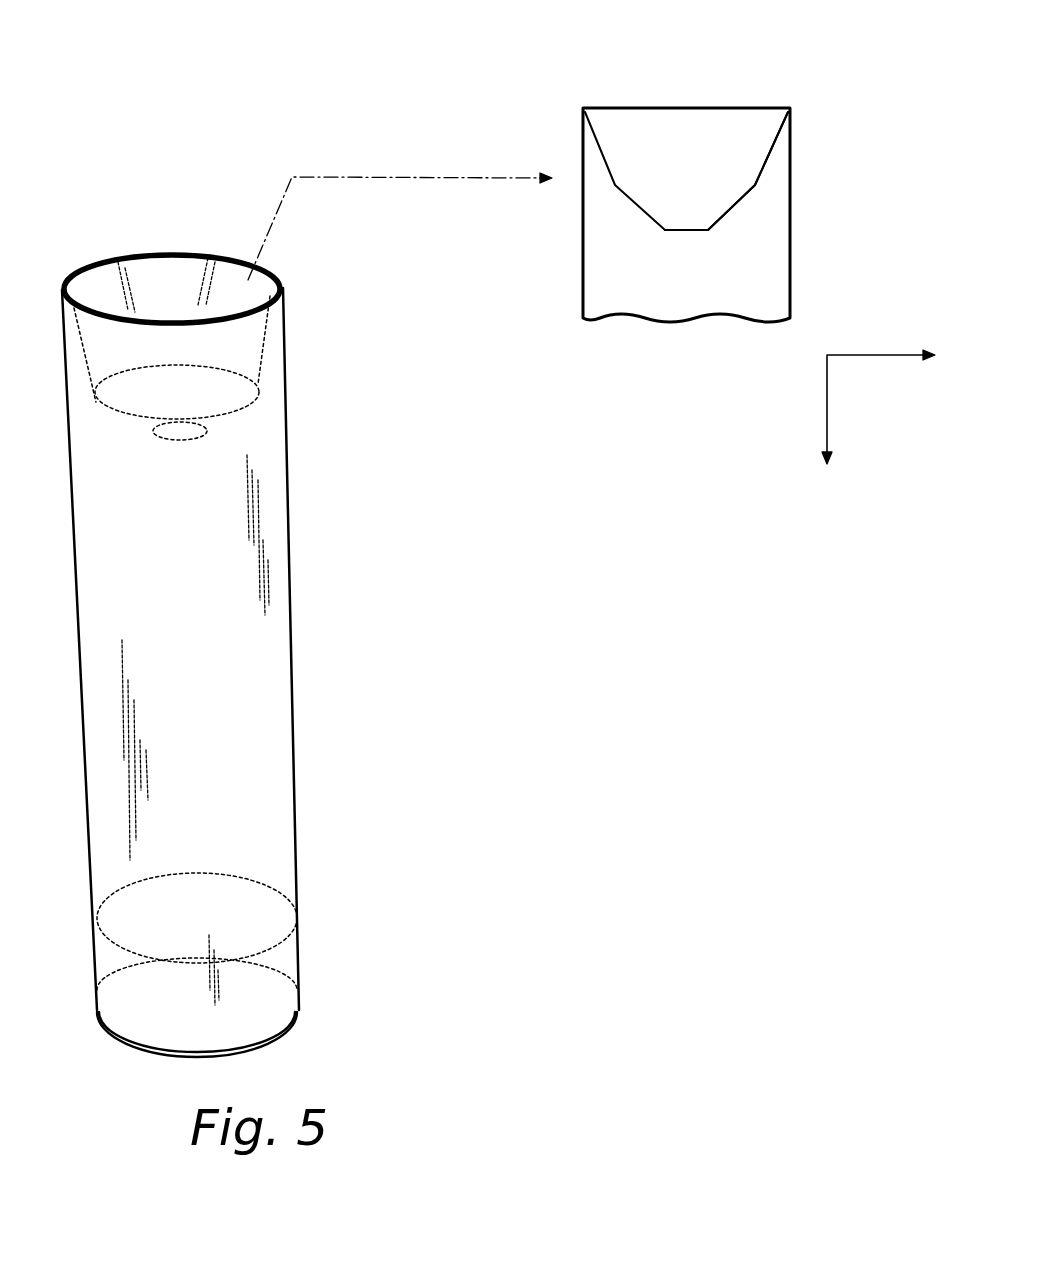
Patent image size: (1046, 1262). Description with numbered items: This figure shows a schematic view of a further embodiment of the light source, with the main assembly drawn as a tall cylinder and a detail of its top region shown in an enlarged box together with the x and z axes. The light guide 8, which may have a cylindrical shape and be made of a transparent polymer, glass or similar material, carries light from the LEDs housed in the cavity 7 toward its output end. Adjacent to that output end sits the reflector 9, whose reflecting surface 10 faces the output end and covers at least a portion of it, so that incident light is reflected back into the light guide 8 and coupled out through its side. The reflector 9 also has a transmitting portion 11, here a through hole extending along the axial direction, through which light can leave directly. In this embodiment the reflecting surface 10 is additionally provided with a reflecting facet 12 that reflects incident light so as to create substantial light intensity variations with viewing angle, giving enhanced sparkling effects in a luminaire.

The cavity 7 is at (287, 962).
The light guide 8 is at (348, 406).
The reflector 9 is at (183, 277).
The reflecting surface 10 is at (650, 220).
The transmitting portion 11 is at (203, 433).
The reflecting facet 12 is at (757, 185).